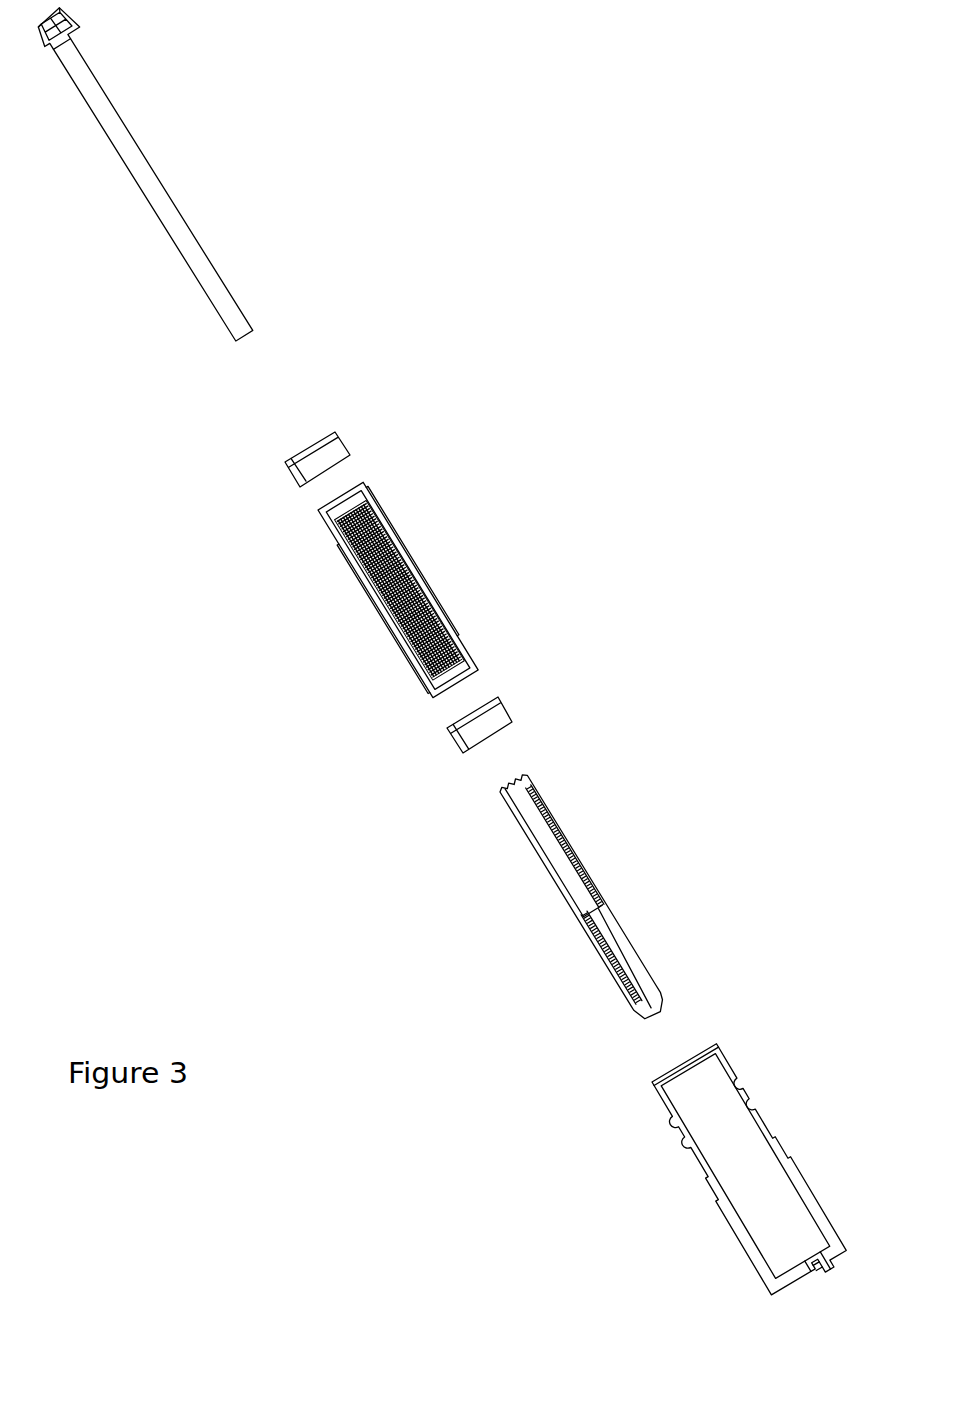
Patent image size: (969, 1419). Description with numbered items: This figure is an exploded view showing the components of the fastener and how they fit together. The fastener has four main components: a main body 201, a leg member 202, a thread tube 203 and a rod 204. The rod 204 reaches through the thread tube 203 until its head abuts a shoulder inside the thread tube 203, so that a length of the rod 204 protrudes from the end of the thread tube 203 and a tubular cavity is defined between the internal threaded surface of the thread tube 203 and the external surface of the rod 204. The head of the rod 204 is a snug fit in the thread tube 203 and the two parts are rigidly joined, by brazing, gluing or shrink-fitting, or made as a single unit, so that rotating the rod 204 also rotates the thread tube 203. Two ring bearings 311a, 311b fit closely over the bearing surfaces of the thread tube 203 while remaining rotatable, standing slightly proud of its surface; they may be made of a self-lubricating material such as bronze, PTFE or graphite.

The rod 204 is at (147, 174).
The thread tube 203 is at (410, 586).
The bearing 311a is at (278, 482).
The bearing 311b is at (445, 747).
The leg member 202 is at (587, 898).
The main body 201 is at (754, 1160).